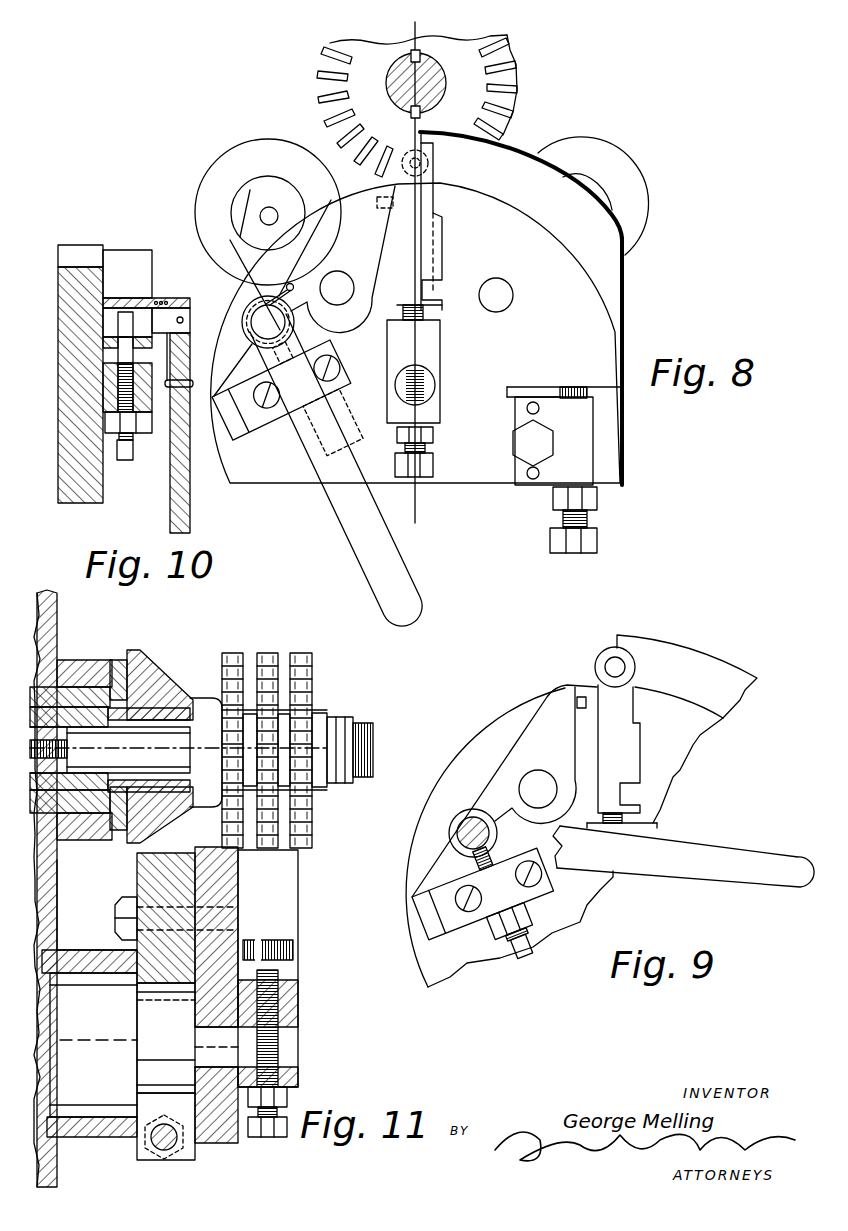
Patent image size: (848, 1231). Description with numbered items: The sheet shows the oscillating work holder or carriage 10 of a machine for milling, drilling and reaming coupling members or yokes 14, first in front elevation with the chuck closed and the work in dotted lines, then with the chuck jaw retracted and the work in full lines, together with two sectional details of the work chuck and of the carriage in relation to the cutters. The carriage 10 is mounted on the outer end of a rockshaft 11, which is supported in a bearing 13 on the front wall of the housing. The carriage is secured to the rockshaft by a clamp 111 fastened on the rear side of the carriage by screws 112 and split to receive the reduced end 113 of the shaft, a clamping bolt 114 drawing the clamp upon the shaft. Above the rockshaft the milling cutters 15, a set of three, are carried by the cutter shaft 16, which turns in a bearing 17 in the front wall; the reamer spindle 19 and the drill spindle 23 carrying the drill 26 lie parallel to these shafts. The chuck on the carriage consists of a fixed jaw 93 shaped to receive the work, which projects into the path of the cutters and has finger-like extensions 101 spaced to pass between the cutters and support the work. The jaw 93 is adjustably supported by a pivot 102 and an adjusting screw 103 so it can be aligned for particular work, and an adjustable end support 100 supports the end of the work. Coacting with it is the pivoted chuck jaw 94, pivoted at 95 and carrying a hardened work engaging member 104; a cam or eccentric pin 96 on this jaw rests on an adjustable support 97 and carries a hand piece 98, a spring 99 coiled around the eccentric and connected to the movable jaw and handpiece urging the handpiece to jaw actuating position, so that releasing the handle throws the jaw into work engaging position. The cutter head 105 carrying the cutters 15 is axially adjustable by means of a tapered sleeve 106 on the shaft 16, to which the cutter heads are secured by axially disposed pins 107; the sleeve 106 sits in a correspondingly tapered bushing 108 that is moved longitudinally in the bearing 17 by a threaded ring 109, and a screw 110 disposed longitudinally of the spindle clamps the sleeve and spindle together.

In FIG. 8, the work holder or carriage 10 is at (226, 237).
In FIG. 10, the work holder or carriage 10 is at (66, 313).
In FIG. 11, the work holder or carriage 10 is at (197, 860).
In FIG. 9, the work holder or carriage 10 is at (470, 957).
In FIG. 8, the rockshaft 11 is at (410, 22).
In FIG. 11, the bearing 13 is at (90, 962).
In FIG. 8, the coupling member or yoke 14 is at (445, 248).
In FIG. 9, the coupling member or yoke 14 is at (626, 747).
In FIG. 8, the milling cutters 15 is at (502, 76).
In FIG. 11, the milling cutters 15 is at (238, 655).
In FIG. 8, the cutter shaft 16 is at (450, 70).
In FIG. 11, the cutter shaft 16 is at (375, 725).
In FIG. 11, the bearing 17 is at (87, 665).
In FIG. 8, the reamer spindle 19 is at (600, 202).
In FIG. 8, the drill spindle 23 is at (252, 195).
In FIG. 8, the drill 26 is at (268, 206).
In FIG. 8, the fixed jaw 93 is at (603, 343).
In FIG. 11, the fixed jaw 93 is at (296, 901).
In FIG. 9, the fixed jaw 93 is at (668, 787).
In FIG. 8, the pivoted chuck jaw 94 is at (363, 308).
In FIG. 10, the pivoted chuck jaw 94 is at (124, 258).
In FIG. 9, the pivoted chuck jaw 94 is at (547, 708).
In FIG. 8, the pivot 95 is at (336, 305).
In FIG. 9, the pivot 95 is at (538, 779).
In FIG. 8, the cam or eccentric pin 96 is at (256, 345).
In FIG. 10, the cam or eccentric pin 96 is at (140, 315).
In FIG. 9, the cam or eccentric pin 96 is at (470, 809).
In FIG. 8, the adjustable support 97 is at (302, 448).
In FIG. 10, the adjustable support 97 is at (125, 355).
In FIG. 9, the adjustable support 97 is at (458, 856).
In FIG. 8, the hand piece 98 is at (338, 498).
In FIG. 10, the hand piece 98 is at (172, 472).
In FIG. 9, the hand piece 98 is at (668, 868).
In FIG. 8, the spring 99 is at (279, 283).
In FIG. 10, the spring 99 is at (167, 388).
In FIG. 8, the adjustable end support 100 is at (425, 382).
In FIG. 11, the adjustable end support 100 is at (279, 975).
In FIG. 9, the adjustable end support 100 is at (646, 823).
In FIG. 8, the finger-like extensions 101 is at (450, 140).
In FIG. 11, the finger-like extensions 101 is at (293, 827).
In FIG. 9, the finger-like extensions 101 is at (628, 642).
In FIG. 8, the pivot 102 is at (514, 297).
In FIG. 8, the adjusting screw 103 is at (594, 396).
In FIG. 8, the hardened work engaging member 104 is at (388, 216).
In FIG. 9, the hardened work engaging member 104 is at (580, 695).
In FIG. 11, the cutter head 105 is at (200, 700).
In FIG. 11, the tapered sleeve 106 is at (92, 792).
In FIG. 11, the axially disposed pins 107 is at (167, 713).
In FIG. 11, the tapered bushing 108 is at (70, 817).
In FIG. 11, the threaded ring 109 is at (120, 665).
In FIG. 11, the screw 110 is at (82, 748).
In FIG. 11, the clamp 111 is at (140, 878).
In FIG. 11, the screws 112 is at (115, 903).
In FIG. 11, the reduced end 113 is at (155, 1031).
In FIG. 11, the clamping bolt 114 is at (166, 1142).